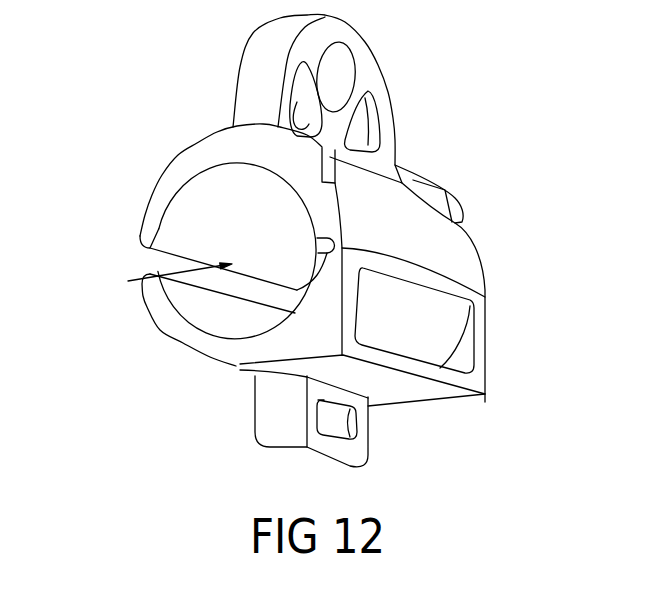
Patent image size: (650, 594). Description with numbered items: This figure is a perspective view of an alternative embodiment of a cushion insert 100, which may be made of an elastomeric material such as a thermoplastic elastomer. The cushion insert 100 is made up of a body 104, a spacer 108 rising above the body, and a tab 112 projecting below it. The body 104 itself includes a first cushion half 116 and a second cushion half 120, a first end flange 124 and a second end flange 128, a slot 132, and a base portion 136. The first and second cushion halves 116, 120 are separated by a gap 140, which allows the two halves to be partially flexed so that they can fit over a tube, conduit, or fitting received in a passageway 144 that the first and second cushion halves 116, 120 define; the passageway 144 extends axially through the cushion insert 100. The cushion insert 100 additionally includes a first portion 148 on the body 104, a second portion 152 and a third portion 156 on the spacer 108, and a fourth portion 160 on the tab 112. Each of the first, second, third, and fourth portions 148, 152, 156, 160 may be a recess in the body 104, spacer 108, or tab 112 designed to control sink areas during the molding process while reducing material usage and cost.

The cushion insert 100 is at (506, 94).
The body 104 is at (463, 250).
The spacer 108 is at (258, 40).
The tab 112 is at (356, 453).
The first cushion half 116 is at (157, 222).
The second cushion half 120 is at (160, 313).
The first end flange 124 is at (178, 160).
The second end flange 128 is at (452, 192).
The slot 132 is at (485, 297).
The base portion 136 is at (240, 350).
The gap 140 is at (153, 258).
The passageway 144 is at (150, 277).
The first portion 148 is at (465, 352).
The second portion 152 is at (302, 122).
The third portion 156 is at (363, 123).
The fourth portion 160 is at (340, 422).